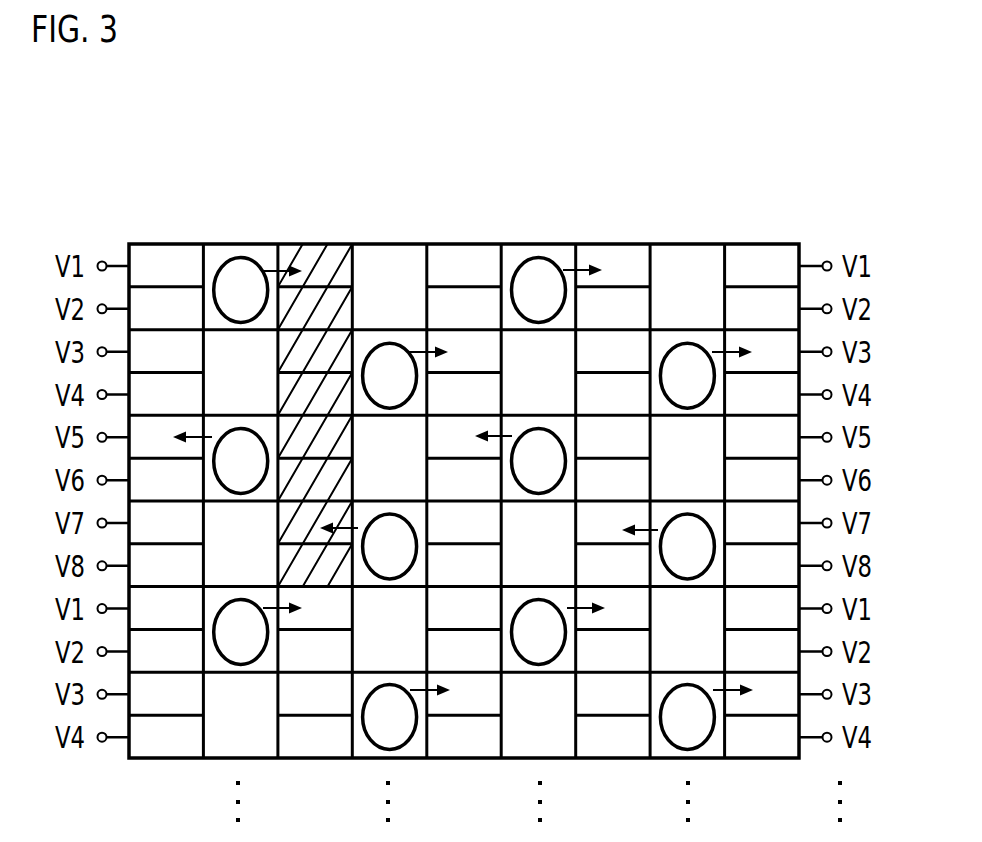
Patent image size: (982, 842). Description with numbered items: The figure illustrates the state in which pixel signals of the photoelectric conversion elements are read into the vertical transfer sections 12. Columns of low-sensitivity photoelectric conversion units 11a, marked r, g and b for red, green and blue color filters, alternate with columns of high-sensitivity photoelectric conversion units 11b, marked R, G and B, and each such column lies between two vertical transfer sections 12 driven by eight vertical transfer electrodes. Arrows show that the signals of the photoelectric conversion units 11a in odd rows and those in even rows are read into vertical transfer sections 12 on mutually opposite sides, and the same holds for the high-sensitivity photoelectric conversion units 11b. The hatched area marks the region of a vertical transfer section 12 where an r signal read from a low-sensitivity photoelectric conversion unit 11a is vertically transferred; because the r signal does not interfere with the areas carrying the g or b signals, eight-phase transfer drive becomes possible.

The vertical transfer section 12 is at (765, 244).
The low-sensitivity photoelectric conversion unit 11a is at (553, 244).
The high-sensitivity photoelectric conversion unit 11b is at (690, 330).